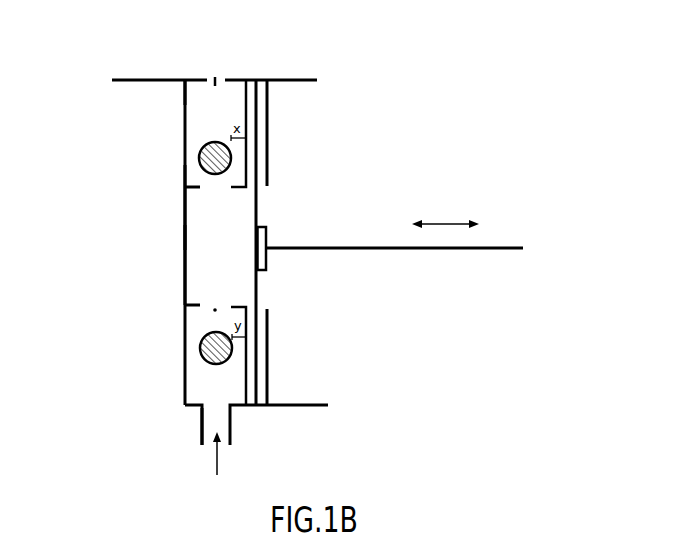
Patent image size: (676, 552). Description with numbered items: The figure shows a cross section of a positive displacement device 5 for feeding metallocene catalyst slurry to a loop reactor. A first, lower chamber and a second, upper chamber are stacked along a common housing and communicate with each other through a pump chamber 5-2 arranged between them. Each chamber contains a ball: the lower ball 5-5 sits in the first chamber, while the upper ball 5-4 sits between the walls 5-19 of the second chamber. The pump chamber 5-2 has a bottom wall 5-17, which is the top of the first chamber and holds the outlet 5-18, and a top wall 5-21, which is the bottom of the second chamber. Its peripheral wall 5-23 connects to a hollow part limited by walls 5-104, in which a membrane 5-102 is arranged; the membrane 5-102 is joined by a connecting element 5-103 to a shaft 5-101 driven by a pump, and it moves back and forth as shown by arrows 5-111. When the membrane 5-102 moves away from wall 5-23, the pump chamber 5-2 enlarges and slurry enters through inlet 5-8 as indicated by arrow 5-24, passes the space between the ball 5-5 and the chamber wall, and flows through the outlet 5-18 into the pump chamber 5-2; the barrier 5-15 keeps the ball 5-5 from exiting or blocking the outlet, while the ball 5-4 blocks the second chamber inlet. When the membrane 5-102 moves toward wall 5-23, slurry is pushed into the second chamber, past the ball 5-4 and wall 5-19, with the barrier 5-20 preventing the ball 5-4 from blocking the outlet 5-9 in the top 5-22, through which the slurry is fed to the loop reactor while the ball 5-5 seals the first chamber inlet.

The positive displacement device 5 is at (57, 146).
The outlet 5-9 is at (220, 75).
The top 5-22 is at (238, 78).
The barrier 5-20 is at (185, 89).
The ball 5-4 is at (200, 158).
The wall 5-19 is at (185, 179).
The top wall 5-21 is at (195, 189).
The peripheral wall 5-23 is at (185, 240).
The pump chamber 5-2 is at (215, 263).
The outlet 5-18 is at (225, 305).
The bottom wall 5-17 is at (192, 303).
The barrier 5-15 is at (215, 311).
The ball 5-5 is at (200, 354).
The inlet 5-8 is at (213, 421).
The arrow 5-24 is at (216, 473).
The walls 5-104 is at (268, 134).
The membrane 5-102 is at (258, 203).
The connecting element 5-103 is at (263, 256).
The shaft 5-101 is at (390, 245).
The arrows 5-111 is at (452, 222).